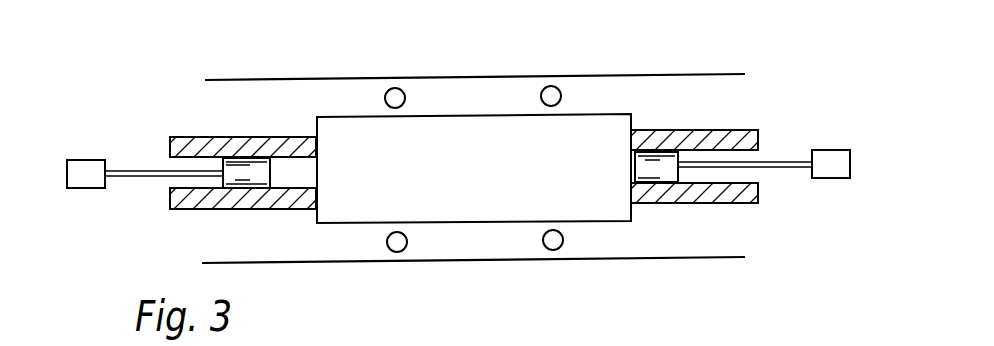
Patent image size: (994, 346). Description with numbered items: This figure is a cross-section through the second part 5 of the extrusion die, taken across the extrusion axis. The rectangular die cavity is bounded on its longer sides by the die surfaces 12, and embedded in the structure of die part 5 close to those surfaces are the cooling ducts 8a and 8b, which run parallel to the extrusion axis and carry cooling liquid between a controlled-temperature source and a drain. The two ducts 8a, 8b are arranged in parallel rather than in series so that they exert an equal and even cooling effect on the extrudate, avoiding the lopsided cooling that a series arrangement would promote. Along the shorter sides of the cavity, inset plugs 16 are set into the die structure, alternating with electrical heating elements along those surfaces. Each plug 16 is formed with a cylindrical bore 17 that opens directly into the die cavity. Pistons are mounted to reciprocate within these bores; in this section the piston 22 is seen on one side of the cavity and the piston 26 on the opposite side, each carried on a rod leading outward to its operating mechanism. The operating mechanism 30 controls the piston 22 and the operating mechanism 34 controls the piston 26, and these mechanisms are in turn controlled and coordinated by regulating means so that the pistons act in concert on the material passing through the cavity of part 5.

The second part 5 is at (606, 66).
The cooling duct 8a is at (397, 88).
The cooling duct 8b is at (552, 86).
The die surface 12 is at (453, 118).
The inset plug 16 is at (245, 137).
The cylindrical bore 17 is at (290, 163).
The piston 22 is at (241, 179).
The piston 26 is at (654, 162).
The operating mechanism 30 is at (88, 160).
The operating mechanism 34 is at (830, 160).